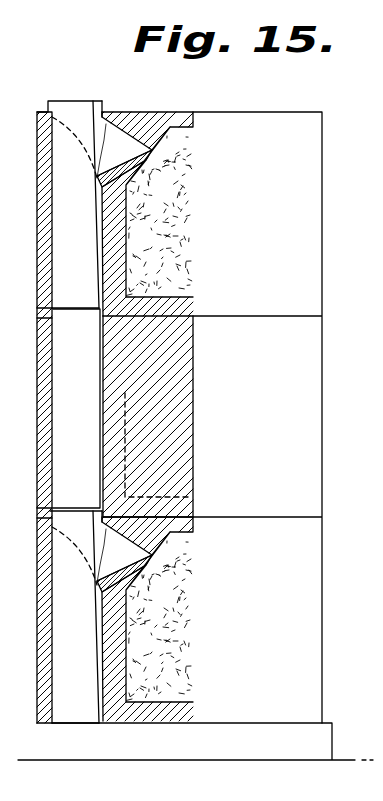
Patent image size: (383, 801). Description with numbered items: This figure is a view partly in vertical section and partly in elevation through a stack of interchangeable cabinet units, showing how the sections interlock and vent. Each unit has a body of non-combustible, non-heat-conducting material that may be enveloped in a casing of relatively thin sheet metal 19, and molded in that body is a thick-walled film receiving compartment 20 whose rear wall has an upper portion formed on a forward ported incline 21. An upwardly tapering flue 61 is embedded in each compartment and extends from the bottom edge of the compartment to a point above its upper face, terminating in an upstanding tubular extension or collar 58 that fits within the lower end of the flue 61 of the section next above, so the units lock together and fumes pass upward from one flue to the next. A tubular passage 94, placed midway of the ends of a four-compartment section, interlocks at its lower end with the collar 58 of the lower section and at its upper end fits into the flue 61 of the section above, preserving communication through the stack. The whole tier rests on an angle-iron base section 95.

The casing of relatively thin sheet metal 19 is at (239, 120).
The film receiving compartment 20 is at (167, 193).
The forward ported incline 21 is at (148, 153).
The upstanding tubular extension 58 is at (92, 101).
The upwardly tapering flue 61 is at (69, 412).
The tubular passage 94 is at (76, 408).
The base section 95 is at (223, 730).